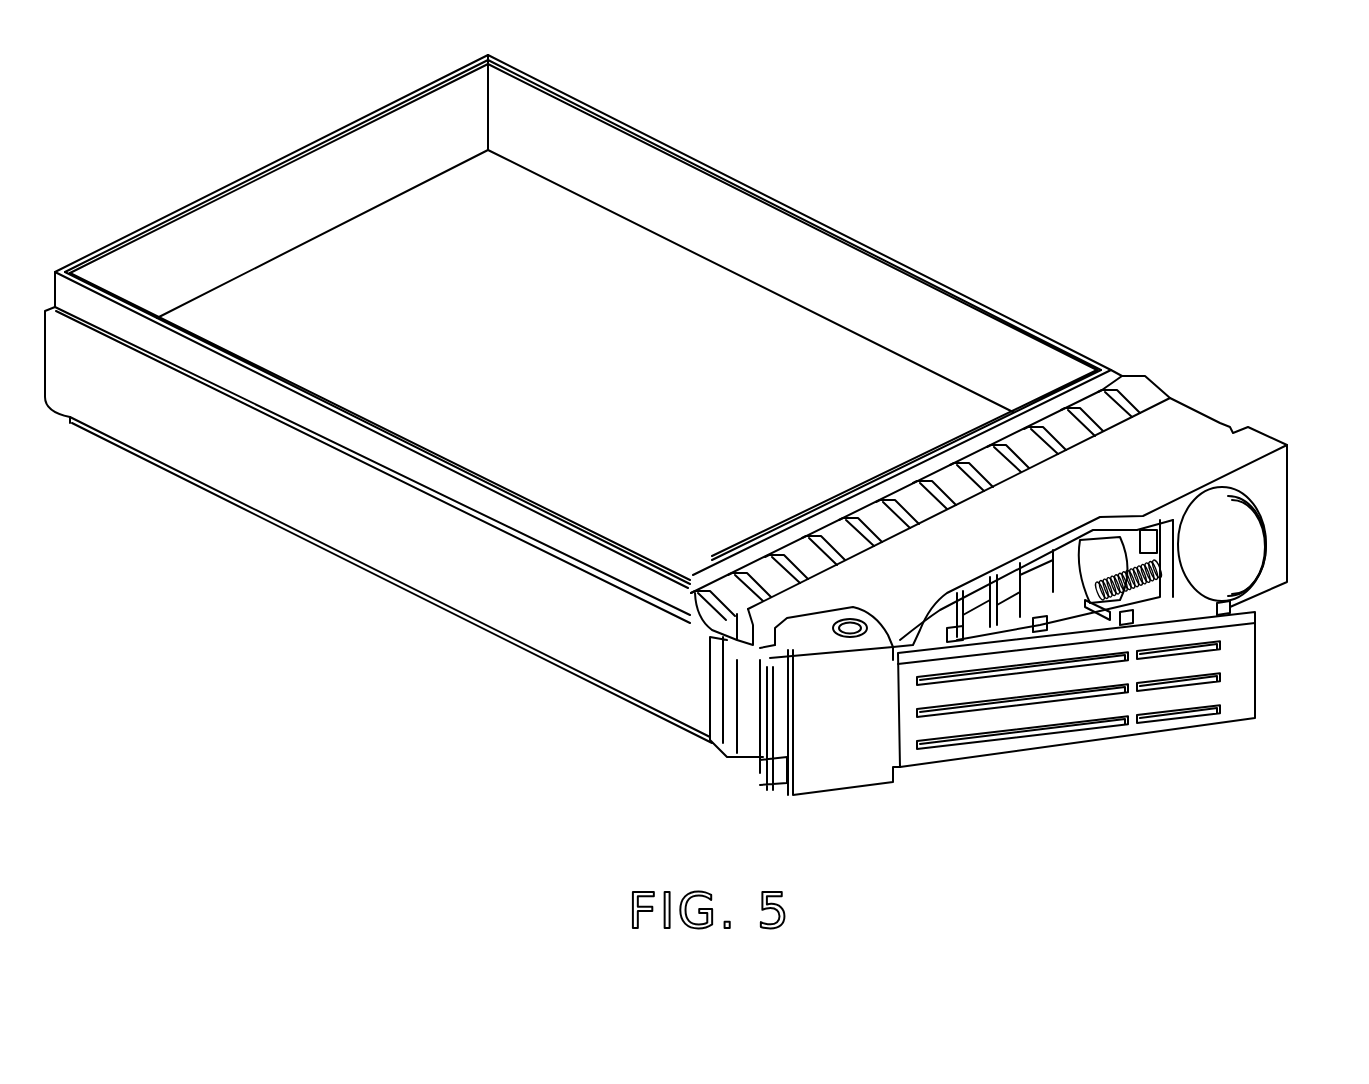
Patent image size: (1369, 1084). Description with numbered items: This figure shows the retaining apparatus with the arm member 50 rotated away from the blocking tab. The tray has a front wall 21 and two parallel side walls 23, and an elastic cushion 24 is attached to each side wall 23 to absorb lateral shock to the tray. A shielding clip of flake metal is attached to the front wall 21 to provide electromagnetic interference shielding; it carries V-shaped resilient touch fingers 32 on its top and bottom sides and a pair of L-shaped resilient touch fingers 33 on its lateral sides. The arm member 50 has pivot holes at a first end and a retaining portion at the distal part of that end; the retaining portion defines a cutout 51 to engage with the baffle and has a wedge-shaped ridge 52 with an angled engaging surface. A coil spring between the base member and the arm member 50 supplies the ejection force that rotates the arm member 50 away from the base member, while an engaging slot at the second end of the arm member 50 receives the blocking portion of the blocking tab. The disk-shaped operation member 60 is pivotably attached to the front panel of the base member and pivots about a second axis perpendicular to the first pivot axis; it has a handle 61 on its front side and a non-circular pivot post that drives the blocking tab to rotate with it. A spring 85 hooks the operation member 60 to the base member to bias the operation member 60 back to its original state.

The front wall 21 is at (1047, 407).
The side wall 23 is at (378, 448).
The elastic cushion 24 is at (407, 528).
The V-shaped resilient touch finger 32 is at (1152, 398).
The L-shaped resilient touch finger 33 is at (727, 710).
The arm member 50 is at (968, 752).
The cutout 51 is at (793, 648).
The wedge-shaped ridge 52 is at (752, 665).
The operation member 60 is at (1260, 512).
The handle 61 is at (1247, 572).
The spring 85 is at (1143, 600).